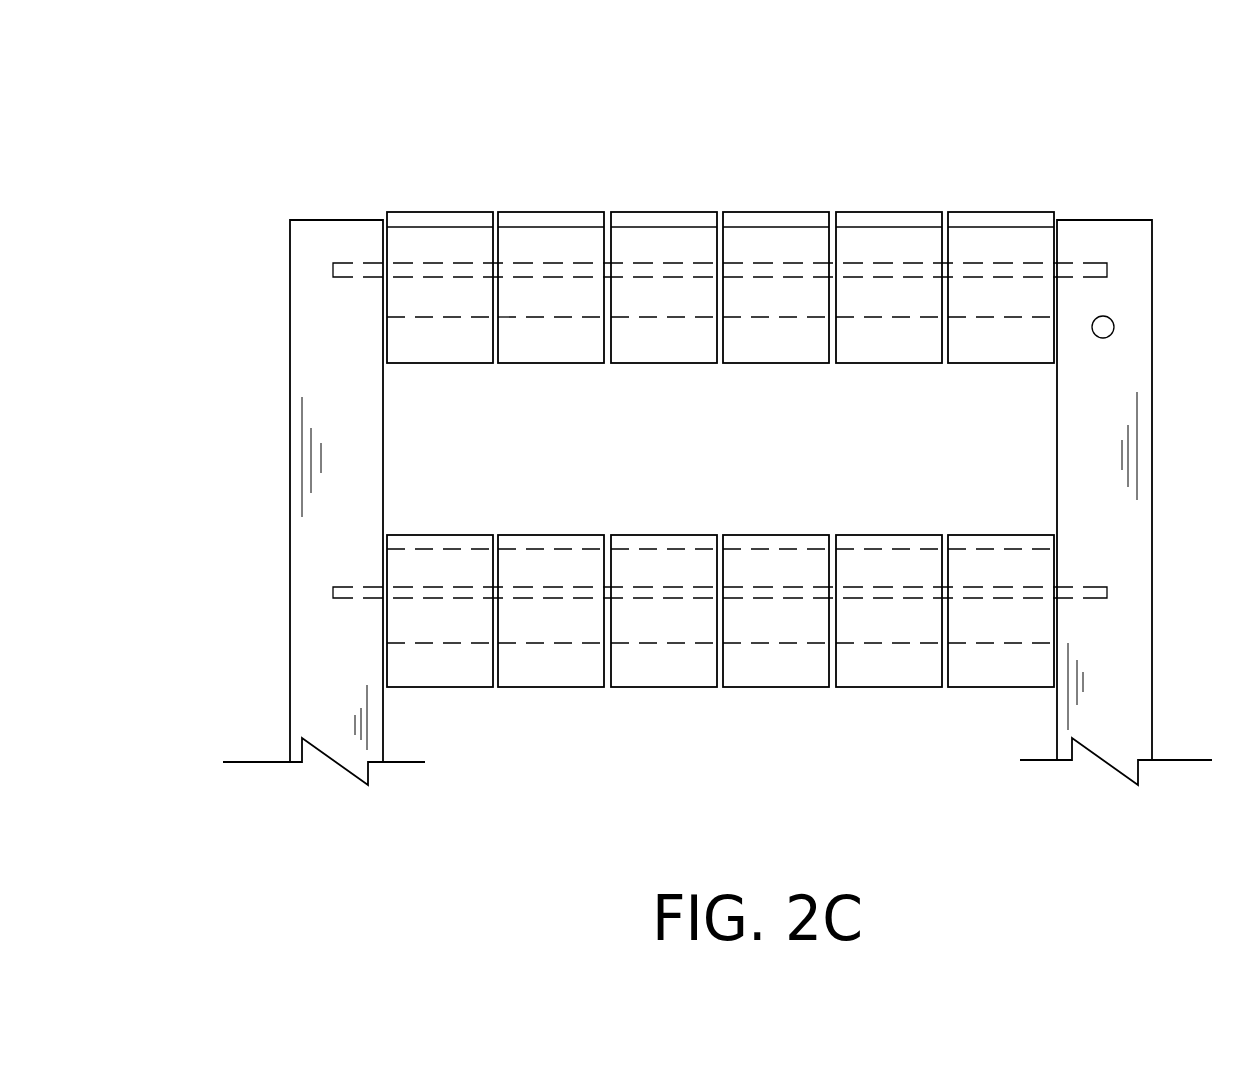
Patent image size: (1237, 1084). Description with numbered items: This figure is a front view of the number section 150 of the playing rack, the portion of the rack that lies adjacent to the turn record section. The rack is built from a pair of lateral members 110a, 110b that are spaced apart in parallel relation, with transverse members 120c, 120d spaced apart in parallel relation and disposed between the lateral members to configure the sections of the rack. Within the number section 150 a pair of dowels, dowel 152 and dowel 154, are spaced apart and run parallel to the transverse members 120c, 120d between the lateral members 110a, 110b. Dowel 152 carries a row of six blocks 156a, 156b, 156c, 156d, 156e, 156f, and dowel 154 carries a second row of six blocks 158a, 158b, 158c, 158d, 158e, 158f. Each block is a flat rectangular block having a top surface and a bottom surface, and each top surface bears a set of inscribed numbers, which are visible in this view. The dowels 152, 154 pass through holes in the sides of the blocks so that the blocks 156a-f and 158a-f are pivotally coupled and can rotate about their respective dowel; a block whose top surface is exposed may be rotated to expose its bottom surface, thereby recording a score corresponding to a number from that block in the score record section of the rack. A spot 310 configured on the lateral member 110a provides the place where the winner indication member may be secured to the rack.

The number section 150 is at (1022, 150).
The dowel 154 is at (1107, 267).
The dowel 152 is at (1107, 592).
The spot 310 is at (1115, 332).
The lateral member 110a is at (1144, 447).
The lateral member 110b is at (297, 458).
The transverse member 120c is at (383, 645).
The transverse member 120d is at (383, 318).
The block 156a is at (442, 688).
The block 156b is at (553, 688).
The block 156c is at (666, 688).
The block 156d is at (778, 688).
The block 156e is at (891, 688).
The block 156f is at (1002, 688).
The block 158a is at (442, 365).
The block 158b is at (553, 365).
The block 158c is at (666, 365).
The block 158d is at (778, 365).
The block 158e is at (891, 365).
The block 158f is at (1002, 365).